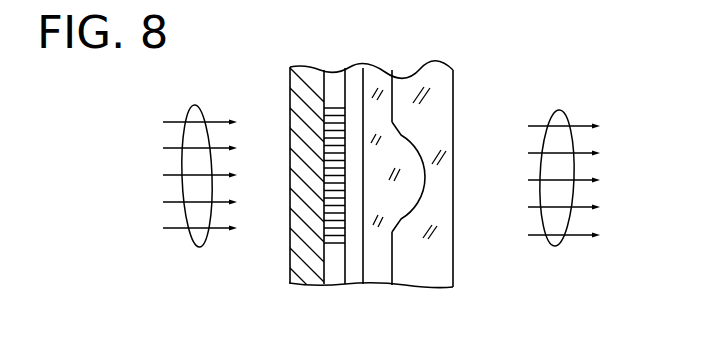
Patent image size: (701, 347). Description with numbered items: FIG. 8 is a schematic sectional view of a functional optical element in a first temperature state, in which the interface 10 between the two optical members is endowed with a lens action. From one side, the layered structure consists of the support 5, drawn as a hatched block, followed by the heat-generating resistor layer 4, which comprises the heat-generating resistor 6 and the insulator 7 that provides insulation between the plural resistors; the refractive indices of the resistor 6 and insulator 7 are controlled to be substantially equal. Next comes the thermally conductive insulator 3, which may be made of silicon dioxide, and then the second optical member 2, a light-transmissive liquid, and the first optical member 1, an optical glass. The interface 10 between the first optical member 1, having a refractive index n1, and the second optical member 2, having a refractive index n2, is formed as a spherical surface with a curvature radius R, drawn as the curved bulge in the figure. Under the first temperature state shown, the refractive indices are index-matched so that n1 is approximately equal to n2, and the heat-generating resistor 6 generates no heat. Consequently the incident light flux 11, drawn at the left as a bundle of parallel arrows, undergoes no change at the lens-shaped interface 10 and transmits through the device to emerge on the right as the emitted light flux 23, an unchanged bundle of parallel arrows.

The first optical member 1 is at (437, 80).
The second optical member 2 is at (390, 85).
The insulator having thermal conductivity 3 is at (360, 78).
The heat-generating resistor layer 4 is at (343, 72).
The support 5 is at (304, 80).
The heat-generating resistor 6 is at (330, 210).
The insulator 7 is at (334, 85).
The interface 10 is at (388, 268).
The incident light flux 11 is at (195, 250).
The emitted light flux 23 is at (560, 250).
The refractive index of the first optical member n1 is at (425, 268).
The refractive index of the second optical member n2 is at (368, 272).